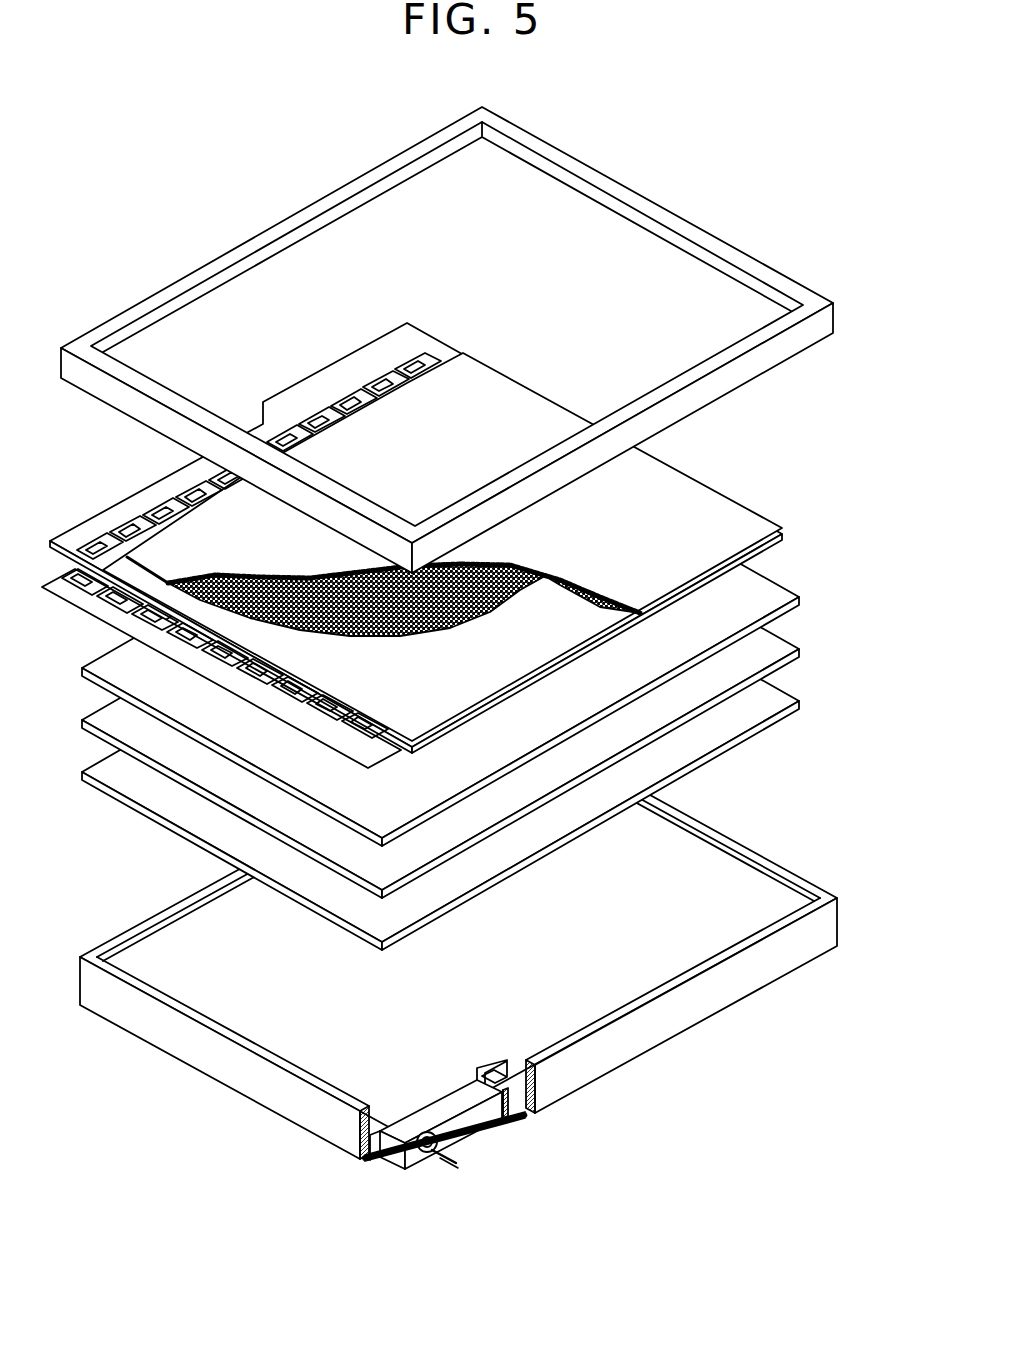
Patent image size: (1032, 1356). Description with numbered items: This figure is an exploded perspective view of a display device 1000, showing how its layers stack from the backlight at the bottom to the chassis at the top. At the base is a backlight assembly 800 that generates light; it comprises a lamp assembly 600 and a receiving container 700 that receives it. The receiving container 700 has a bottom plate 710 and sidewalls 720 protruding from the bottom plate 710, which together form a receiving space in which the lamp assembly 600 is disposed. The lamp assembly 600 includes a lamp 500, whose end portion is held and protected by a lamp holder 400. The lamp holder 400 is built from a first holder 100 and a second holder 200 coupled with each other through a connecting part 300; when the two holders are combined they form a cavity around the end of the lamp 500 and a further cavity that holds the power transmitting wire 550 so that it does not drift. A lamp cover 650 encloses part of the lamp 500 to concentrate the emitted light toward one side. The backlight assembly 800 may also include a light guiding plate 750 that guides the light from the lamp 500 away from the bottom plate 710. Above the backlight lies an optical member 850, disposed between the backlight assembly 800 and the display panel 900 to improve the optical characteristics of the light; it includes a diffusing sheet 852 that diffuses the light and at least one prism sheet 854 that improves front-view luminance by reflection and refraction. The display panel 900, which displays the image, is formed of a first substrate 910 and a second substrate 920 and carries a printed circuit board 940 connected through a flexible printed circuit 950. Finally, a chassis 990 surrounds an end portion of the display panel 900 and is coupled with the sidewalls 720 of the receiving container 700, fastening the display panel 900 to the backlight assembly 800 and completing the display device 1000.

The display device 1000 is at (501, 82).
The chassis 990 is at (288, 195).
The display panel 900 is at (412, 503).
The first substrate 910 is at (388, 370).
The second substrate 920 is at (360, 442).
The printed circuit board 940 is at (296, 278).
The flexible printed circuit 950 is at (423, 364).
The optical member 850 is at (499, 688).
The diffusing sheet 852 is at (777, 702).
The prism sheet 854 is at (787, 648).
The backlight assembly 800 is at (443, 939).
The light guiding plate 750 is at (265, 1025).
The lamp cover 650 is at (597, 1020).
The receiving container 700 is at (574, 1136).
The bottom plate 710 is at (510, 1112).
The sidewalls 720 is at (558, 1080).
The lamp assembly 600 is at (453, 1191).
The lamp holder 400 is at (415, 1173).
The connecting part 300 is at (366, 1163).
The first holder 100 is at (393, 1163).
The second holder 200 is at (446, 1194).
The power transmitting wire 550 is at (447, 1168).
The lamp 500 is at (518, 1120).